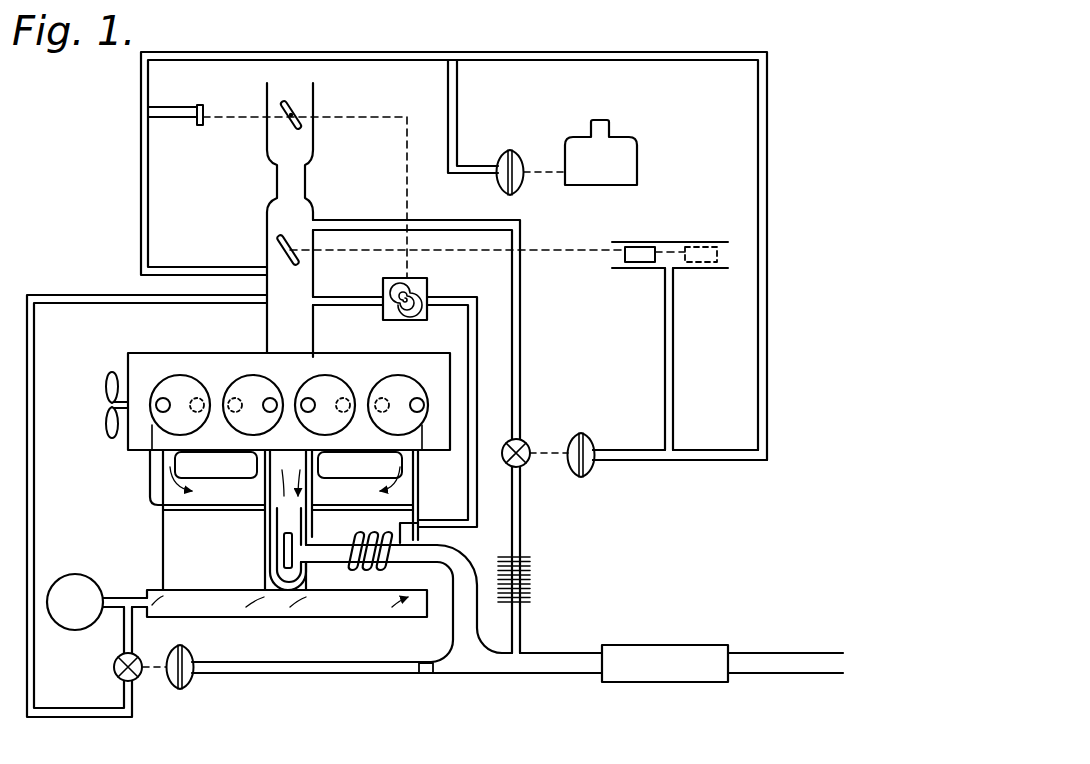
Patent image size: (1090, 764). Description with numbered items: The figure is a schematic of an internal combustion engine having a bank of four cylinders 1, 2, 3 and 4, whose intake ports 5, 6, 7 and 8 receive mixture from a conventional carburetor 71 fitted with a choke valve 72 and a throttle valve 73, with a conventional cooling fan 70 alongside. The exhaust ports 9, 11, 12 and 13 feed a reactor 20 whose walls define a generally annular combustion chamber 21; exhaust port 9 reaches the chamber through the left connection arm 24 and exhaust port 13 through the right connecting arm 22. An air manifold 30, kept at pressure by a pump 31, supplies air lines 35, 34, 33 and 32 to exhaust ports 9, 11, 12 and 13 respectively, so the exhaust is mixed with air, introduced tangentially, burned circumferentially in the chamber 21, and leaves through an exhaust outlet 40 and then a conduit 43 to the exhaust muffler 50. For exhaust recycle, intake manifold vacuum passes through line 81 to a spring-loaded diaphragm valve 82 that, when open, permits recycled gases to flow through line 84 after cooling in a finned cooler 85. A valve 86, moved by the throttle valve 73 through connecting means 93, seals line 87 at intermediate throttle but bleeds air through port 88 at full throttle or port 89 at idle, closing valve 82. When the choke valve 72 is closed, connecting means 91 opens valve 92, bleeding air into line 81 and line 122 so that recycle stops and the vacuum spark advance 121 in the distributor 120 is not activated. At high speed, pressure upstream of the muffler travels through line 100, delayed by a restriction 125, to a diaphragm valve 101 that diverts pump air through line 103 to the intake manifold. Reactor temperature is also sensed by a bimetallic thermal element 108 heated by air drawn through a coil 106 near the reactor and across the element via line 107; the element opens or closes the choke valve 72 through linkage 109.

The cylinder 1 is at (172, 376).
The cylinder 2 is at (246, 376).
The cylinder 3 is at (329, 376).
The cylinder 4 is at (400, 376).
The intake port 5 is at (198, 397).
The intake port 6 is at (235, 397).
The intake port 7 is at (345, 398).
The intake port 8 is at (383, 397).
The exhaust port 9 is at (162, 398).
The exhaust port 11 is at (270, 398).
The exhaust port 12 is at (307, 398).
The exhaust port 13 is at (419, 398).
The reactor 20 is at (382, 512).
The combustion chamber 21 is at (310, 538).
The right connecting arm 22 is at (440, 464).
The left connection arm 24 is at (146, 481).
The air manifold 30 is at (300, 620).
The pump 31 is at (77, 574).
The air line 32 is at (419, 517).
The air line 33 is at (316, 575).
The air line 34 is at (266, 518).
The air line 35 is at (162, 536).
The exhaust outlet 40 is at (283, 549).
The conduit 43 is at (472, 562).
The exhaust muffler 50 is at (690, 684).
The cooling fan 70 is at (110, 372).
The carburetor 71 is at (309, 186).
The choke valve 72 is at (293, 101).
The throttle valve 73 is at (290, 270).
The line 81 is at (257, 52).
The diaphragm valve 82 is at (527, 443).
The line 84 is at (520, 356).
The finned cooler 85 is at (531, 560).
The valve 86 is at (645, 247).
The line 87 is at (674, 335).
The port 88 is at (722, 252).
The port 89 is at (614, 269).
The connecting means 91 is at (242, 116).
The valve 92 is at (204, 105).
The connecting means 93 is at (455, 252).
The line 100 is at (322, 674).
The diaphragm valve 101 is at (140, 682).
The line 103 is at (92, 718).
The coil 106 is at (373, 575).
The line 107 is at (358, 297).
The bimetallic thermal element 108 is at (396, 320).
The linkage 109 is at (385, 117).
The distributor 120 is at (638, 165).
The vacuum spark advance 121 is at (515, 150).
The line 122 is at (455, 125).
The restriction 125 is at (424, 676).